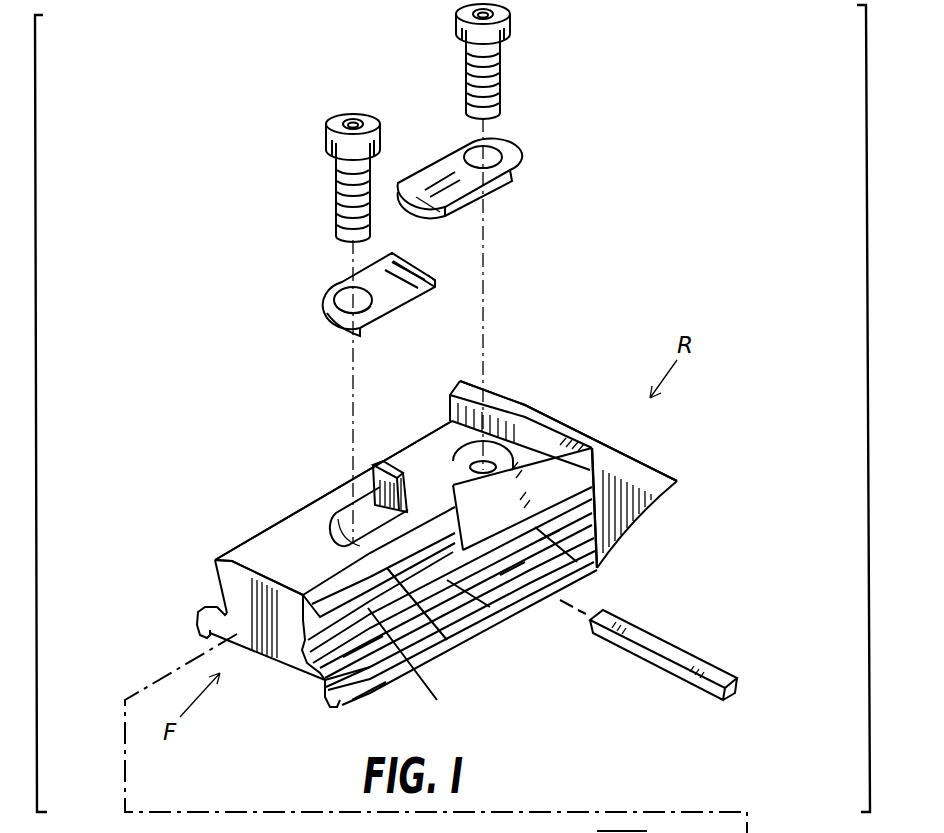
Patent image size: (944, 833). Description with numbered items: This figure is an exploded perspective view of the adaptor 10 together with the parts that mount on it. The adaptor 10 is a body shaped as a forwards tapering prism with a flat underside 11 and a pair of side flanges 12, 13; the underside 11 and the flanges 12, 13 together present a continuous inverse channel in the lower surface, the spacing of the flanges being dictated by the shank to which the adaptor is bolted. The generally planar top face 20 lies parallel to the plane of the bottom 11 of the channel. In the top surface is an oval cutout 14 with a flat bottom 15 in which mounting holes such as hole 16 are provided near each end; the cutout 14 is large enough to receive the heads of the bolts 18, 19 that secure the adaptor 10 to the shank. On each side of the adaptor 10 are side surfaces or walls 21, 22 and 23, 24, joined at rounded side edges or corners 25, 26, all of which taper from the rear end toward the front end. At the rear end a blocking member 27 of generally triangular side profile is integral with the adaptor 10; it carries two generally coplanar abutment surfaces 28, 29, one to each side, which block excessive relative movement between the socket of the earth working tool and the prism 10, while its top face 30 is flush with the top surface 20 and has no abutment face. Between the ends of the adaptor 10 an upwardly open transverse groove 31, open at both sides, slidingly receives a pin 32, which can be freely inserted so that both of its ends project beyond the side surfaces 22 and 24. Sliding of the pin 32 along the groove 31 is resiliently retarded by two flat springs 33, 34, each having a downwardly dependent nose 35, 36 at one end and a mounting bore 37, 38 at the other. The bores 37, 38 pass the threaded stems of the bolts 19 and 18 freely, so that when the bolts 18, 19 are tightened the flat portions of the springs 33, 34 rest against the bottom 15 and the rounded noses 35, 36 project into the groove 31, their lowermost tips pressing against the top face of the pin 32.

The adaptor 10 is at (450, 536).
The flat underside 11 is at (277, 663).
The side flange 12 is at (208, 637).
The side flange 13 is at (327, 695).
The oval cutout 14 is at (474, 547).
The flat bottom 15 is at (452, 446).
The mounting hole 16 is at (517, 428).
The bolt 18 is at (510, 18).
The bolt 19 is at (330, 118).
The top face 20 is at (308, 533).
The side surface 21 is at (265, 532).
The side surface 22 is at (222, 583).
The side surface 23 is at (457, 610).
The side surface 24 is at (367, 607).
The rounded side edge 25 is at (222, 597).
The rounded side edge 26 is at (487, 602).
The blocking member 27 is at (660, 470).
The abutment surface 28 is at (453, 408).
The abutment surface 29 is at (583, 500).
The top face of blocking member 30 is at (597, 443).
The transverse groove 31 is at (380, 462).
The pin 32 is at (700, 653).
The flat spring 33 is at (368, 279).
The flat spring 34 is at (490, 185).
The nose 35 is at (435, 285).
The nose 36 is at (424, 212).
The mounting bore 37 is at (332, 293).
The mounting bore 38 is at (500, 150).